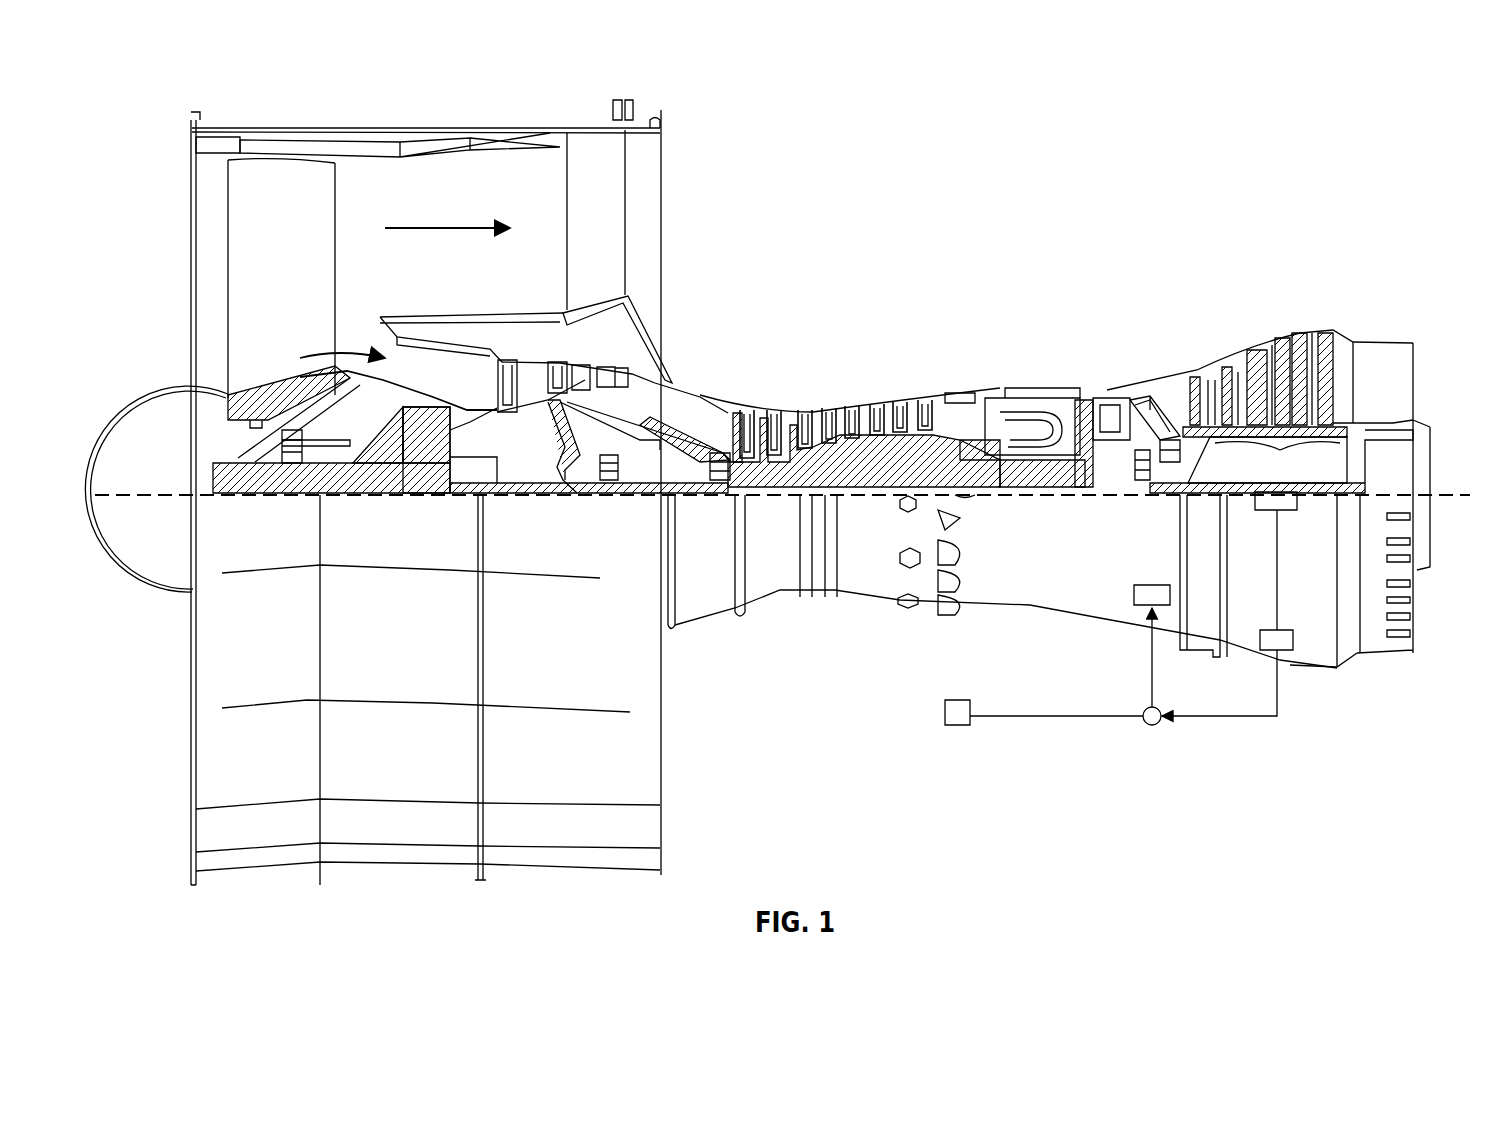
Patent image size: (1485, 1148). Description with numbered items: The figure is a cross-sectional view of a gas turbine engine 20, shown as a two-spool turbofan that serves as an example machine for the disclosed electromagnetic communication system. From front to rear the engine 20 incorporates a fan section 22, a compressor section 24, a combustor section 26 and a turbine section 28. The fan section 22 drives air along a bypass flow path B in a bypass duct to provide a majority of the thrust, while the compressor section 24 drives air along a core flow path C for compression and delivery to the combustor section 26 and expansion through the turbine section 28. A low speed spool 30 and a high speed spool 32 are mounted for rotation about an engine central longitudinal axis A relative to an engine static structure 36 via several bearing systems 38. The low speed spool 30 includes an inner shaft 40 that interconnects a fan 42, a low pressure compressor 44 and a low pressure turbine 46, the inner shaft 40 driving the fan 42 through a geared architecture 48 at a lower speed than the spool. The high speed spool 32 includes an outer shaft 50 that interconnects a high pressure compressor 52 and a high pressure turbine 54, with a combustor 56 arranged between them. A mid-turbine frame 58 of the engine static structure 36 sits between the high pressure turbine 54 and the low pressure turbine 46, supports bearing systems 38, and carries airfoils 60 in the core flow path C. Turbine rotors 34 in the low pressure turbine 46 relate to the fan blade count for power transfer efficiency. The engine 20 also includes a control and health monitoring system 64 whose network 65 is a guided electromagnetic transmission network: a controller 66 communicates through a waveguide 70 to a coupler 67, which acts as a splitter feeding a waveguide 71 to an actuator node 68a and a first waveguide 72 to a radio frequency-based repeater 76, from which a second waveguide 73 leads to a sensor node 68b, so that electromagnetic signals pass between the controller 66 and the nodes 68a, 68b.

The gas turbine engine 20 is at (1236, 168).
The fan section 22 is at (462, 117).
The compressor section 24 is at (854, 355).
The combustor section 26 is at (1022, 355).
The turbine section 28 is at (1120, 312).
The low speed spool 30 is at (890, 505).
The high speed spool 32 is at (935, 448).
The turbine rotors 34 is at (1257, 465).
The engine static structure 36 is at (920, 620).
The bearing systems 38 is at (293, 455).
The inner shaft 40 is at (676, 508).
The fan 42 is at (275, 252).
The low pressure compressor 44 is at (578, 375).
The low pressure turbine 46 is at (1272, 362).
The geared architecture 48 is at (428, 465).
The outer shaft 50 is at (1050, 485).
The high pressure compressor 52 is at (835, 460).
The high pressure turbine 54 is at (1108, 398).
The combustor 56 is at (1030, 412).
The mid-turbine frame 58 is at (1150, 395).
The airfoils 60 is at (1147, 405).
The control and health monitoring system 64 is at (1218, 745).
The network 65 is at (1340, 760).
The controller 66 is at (945, 715).
The coupler 67 is at (1152, 726).
The actuator node 68a is at (1130, 588).
The sensor node 68b is at (1280, 512).
The waveguide 70 is at (1000, 717).
The waveguide 71 is at (1150, 680).
The first waveguide 72 is at (1280, 712).
The second waveguide 73 is at (1275, 582).
The radio frequency-based repeater 76 is at (1288, 652).
The engine central longitudinal axis A is at (1425, 492).
The bypass flow path B is at (455, 225).
The core flow path C is at (305, 358).